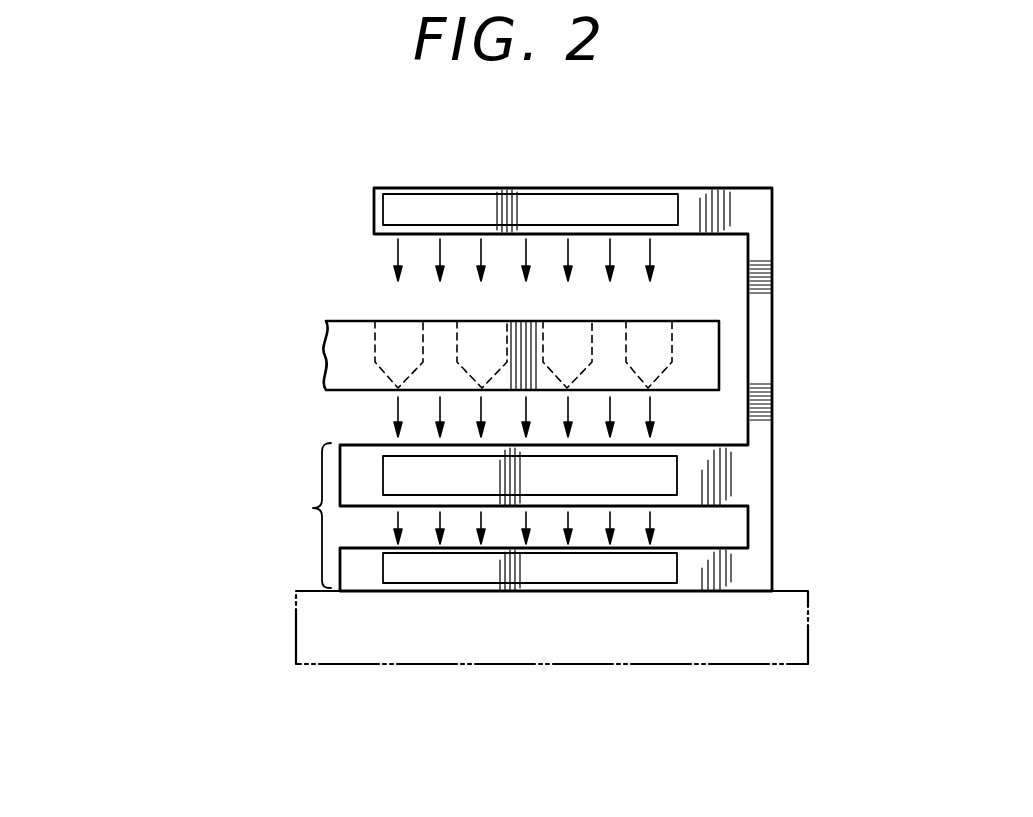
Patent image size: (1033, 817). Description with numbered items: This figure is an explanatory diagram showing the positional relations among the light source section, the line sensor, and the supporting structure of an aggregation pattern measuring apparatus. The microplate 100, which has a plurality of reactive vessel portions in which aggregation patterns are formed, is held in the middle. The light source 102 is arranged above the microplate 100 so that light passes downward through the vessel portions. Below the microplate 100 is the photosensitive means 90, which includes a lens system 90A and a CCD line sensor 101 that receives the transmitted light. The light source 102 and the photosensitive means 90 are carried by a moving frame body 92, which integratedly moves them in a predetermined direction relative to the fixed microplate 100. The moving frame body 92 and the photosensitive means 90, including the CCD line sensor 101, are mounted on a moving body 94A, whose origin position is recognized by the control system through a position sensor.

The moving frame body 92 is at (752, 188).
The light source 102 is at (545, 208).
The microplate 100 is at (340, 319).
The photosensitive means 90 is at (313, 508).
The lens system 90A is at (383, 460).
The CCD line sensor 101 is at (563, 573).
The moving body 94A is at (398, 645).